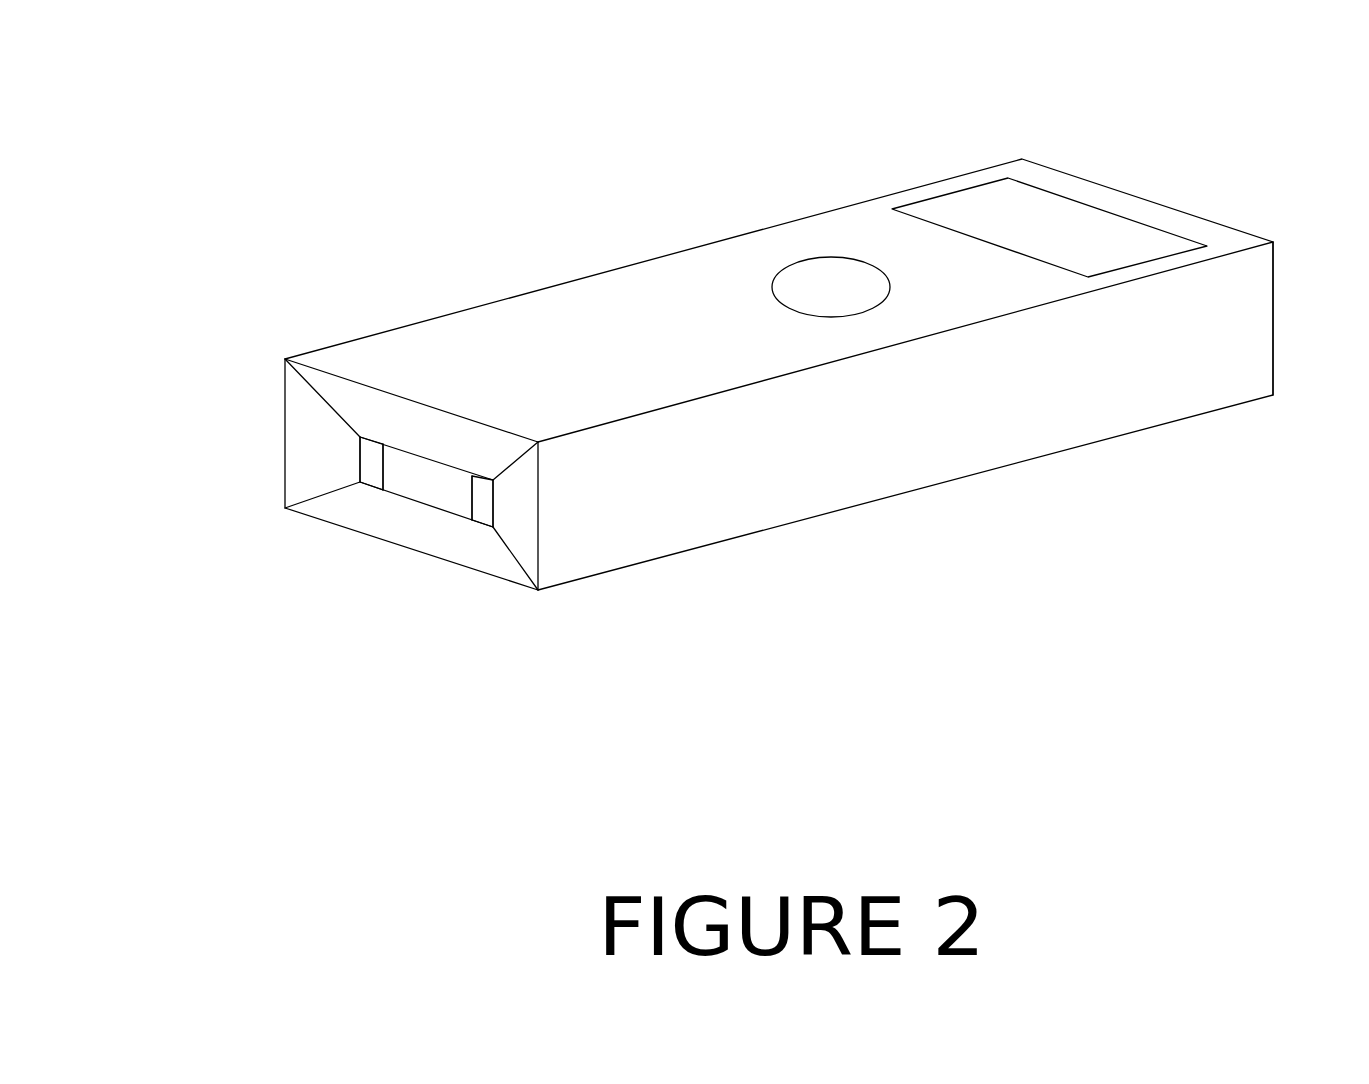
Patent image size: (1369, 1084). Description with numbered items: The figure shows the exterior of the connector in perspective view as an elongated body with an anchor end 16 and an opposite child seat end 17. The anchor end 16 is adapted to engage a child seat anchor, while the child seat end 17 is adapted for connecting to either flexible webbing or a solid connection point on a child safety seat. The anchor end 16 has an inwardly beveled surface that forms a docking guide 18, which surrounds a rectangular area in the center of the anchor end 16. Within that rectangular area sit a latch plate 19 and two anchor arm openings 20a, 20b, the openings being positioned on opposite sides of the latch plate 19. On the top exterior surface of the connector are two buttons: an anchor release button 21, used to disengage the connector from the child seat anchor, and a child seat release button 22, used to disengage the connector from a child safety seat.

The anchor end 16 is at (564, 605).
The child seat end 17 is at (1262, 425).
The docking guide 18 is at (342, 397).
The latch plate 19 is at (432, 483).
The anchor arm opening 20a is at (375, 470).
The anchor arm opening 20b is at (487, 503).
The anchor release button 21 is at (824, 285).
The child seat release button 22 is at (1042, 227).